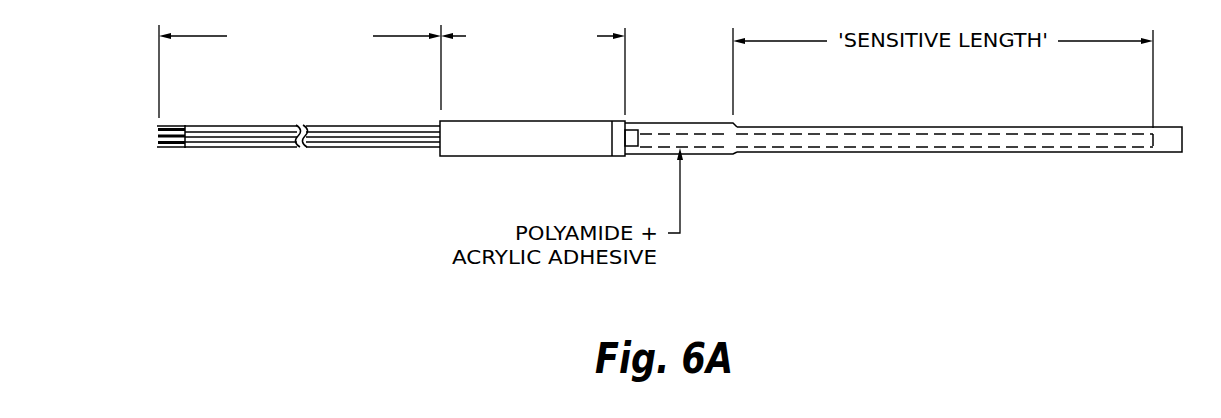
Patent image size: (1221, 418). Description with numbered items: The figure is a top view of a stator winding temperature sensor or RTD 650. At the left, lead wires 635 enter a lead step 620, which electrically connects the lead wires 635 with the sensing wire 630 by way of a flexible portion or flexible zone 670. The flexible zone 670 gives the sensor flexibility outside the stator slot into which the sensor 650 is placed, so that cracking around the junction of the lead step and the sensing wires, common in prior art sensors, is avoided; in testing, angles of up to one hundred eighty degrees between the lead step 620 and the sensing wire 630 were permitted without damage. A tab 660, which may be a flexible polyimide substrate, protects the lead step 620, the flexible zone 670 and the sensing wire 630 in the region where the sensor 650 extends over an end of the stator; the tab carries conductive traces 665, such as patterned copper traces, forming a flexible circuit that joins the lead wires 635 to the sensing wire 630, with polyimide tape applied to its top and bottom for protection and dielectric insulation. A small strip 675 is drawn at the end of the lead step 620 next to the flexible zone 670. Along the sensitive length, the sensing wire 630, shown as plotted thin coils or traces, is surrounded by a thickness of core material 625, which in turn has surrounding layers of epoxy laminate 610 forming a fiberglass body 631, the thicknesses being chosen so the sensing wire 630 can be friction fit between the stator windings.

The stator winding temperature sensor 650 is at (277, 136).
The lead wires 635 is at (300, 70).
The lead step 620 is at (532, 86).
The strip at lead step end 675 is at (613, 120).
The flexible zone 670 is at (681, 80).
The tab 660 is at (638, 160).
The conductive traces 665 is at (697, 130).
The epoxy laminate 610 is at (807, 166).
The core material 625 is at (877, 128).
The fiberglass body 631 is at (943, 128).
The sensing wire 630 is at (1020, 154).